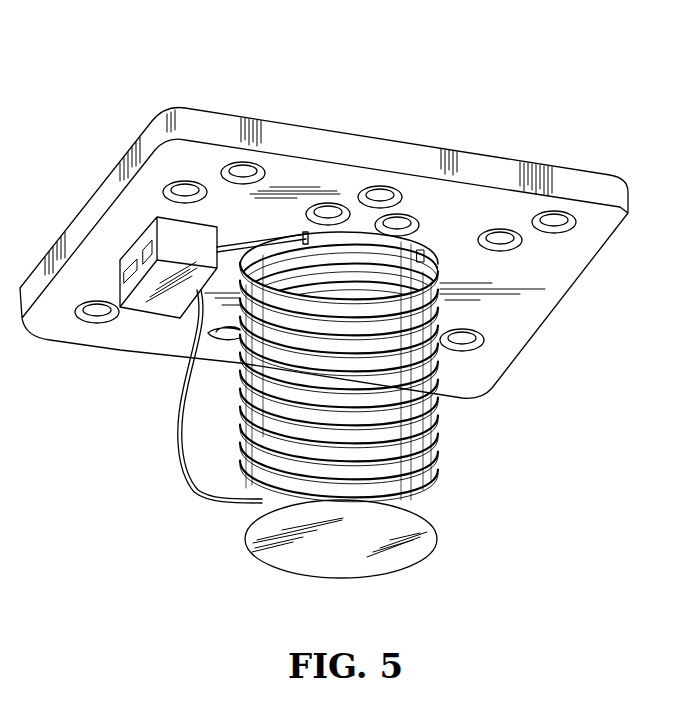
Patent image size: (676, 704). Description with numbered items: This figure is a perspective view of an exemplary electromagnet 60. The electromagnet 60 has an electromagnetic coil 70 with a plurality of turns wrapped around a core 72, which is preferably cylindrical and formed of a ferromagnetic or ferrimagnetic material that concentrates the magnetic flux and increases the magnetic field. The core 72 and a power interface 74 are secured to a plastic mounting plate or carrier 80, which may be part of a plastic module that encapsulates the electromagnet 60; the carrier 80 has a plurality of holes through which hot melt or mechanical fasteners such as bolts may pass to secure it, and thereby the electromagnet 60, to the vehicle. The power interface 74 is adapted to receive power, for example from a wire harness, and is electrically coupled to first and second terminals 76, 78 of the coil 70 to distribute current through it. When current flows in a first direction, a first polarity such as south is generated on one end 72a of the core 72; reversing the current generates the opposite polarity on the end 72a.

The electromagnet 60 is at (168, 73).
The electromagnetic coil 70 is at (435, 427).
The core 72 is at (363, 470).
The end of the core 72a is at (343, 543).
The power interface 74 is at (130, 243).
The first terminal 76 is at (266, 232).
The second terminal 78 is at (177, 415).
The mounting carrier 80 is at (483, 150).